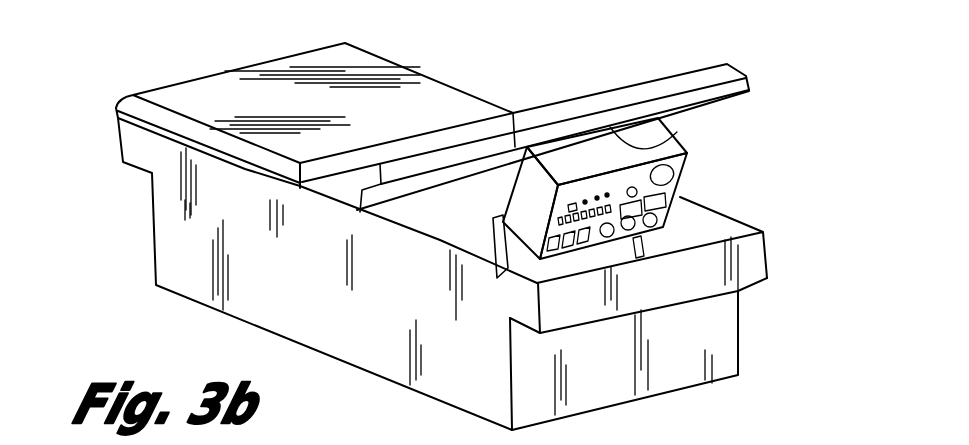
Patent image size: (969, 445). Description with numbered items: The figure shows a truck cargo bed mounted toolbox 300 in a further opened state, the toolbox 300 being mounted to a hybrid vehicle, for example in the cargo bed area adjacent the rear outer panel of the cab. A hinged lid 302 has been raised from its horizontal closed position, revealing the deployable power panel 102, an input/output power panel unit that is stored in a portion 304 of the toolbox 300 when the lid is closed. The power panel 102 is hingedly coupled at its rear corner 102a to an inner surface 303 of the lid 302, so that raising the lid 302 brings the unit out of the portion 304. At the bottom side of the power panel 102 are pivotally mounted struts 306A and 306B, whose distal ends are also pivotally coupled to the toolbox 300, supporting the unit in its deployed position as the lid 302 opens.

The toolbox 300 is at (540, 84).
The hinged lid 302 is at (723, 62).
The inner surface 303 is at (483, 155).
The portion 304 is at (738, 331).
The strut 306A is at (493, 241).
The strut 306B is at (713, 213).
The deployable power panel 102 is at (685, 167).
The rear corner 102a is at (674, 148).